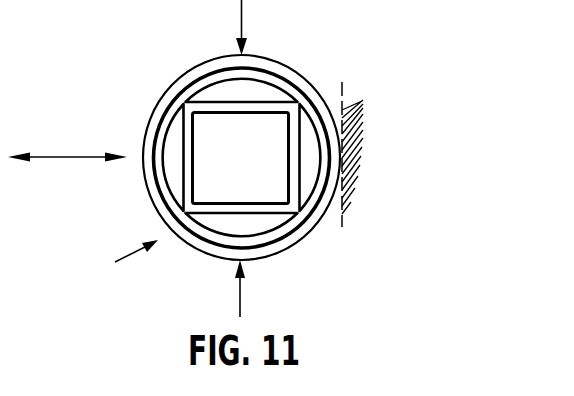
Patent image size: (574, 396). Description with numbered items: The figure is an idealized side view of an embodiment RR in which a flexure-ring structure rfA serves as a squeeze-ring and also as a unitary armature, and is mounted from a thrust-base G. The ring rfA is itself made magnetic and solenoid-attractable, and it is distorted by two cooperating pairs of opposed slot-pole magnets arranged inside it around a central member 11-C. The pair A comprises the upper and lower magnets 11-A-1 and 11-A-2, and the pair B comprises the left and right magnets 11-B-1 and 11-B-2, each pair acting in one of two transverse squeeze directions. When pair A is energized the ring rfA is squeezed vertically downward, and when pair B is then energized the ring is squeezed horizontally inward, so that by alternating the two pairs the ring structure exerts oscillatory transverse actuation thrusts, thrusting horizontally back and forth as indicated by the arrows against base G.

The horizontal magnet 11-A-1 is at (273, 90).
The horizontal magnet 11-A-2 is at (263, 231).
The vertical magnet 11-B-1 is at (313, 128).
The vertical magnet 11-B-2 is at (173, 120).
The central square core 11-C is at (241, 158).
The flexure-ring structure rfA is at (318, 91).
The base G is at (383, 164).
The embodiment RR is at (119, 259).